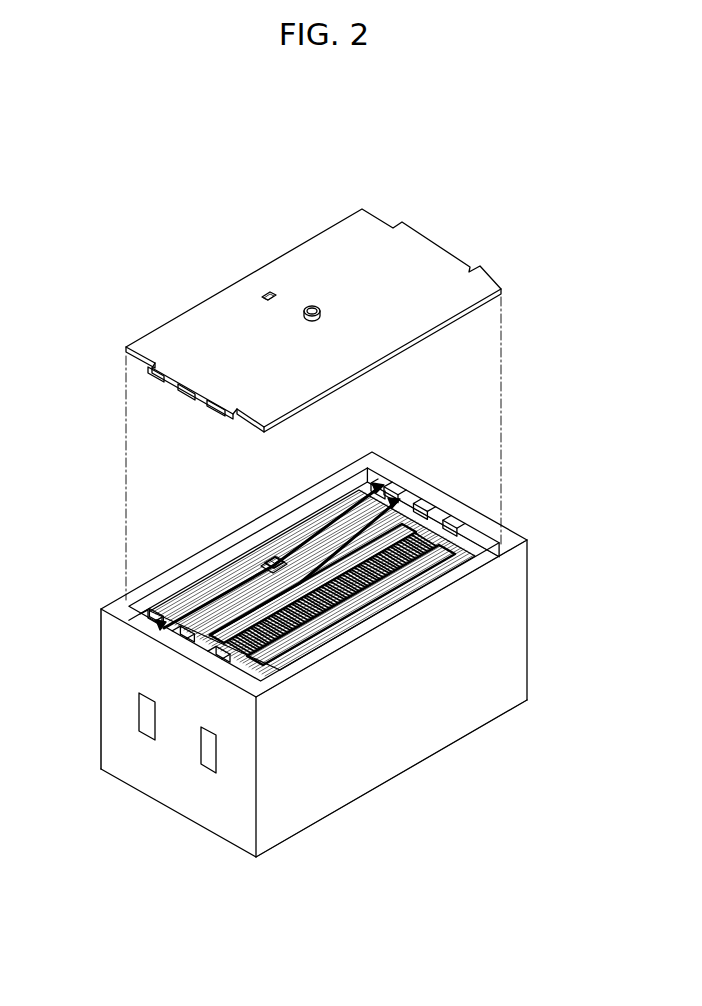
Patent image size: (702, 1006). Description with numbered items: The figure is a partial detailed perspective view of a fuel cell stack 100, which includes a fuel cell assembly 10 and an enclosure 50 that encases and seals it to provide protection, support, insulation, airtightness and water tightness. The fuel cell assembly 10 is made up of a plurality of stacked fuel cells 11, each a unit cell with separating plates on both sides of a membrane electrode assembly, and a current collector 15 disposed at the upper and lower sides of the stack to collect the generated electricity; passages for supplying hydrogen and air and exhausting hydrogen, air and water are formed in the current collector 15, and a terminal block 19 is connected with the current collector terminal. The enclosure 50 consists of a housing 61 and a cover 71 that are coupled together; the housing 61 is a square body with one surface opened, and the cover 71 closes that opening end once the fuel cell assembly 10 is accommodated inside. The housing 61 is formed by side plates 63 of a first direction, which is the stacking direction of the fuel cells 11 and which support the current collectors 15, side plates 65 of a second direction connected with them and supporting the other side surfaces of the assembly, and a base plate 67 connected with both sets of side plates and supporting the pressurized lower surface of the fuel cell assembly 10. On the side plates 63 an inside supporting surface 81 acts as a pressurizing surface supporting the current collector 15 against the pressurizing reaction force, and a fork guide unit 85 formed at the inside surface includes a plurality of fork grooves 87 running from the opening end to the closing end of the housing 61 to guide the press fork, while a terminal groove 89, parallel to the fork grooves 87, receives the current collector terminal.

The fuel cell stack 100 is at (170, 190).
The enclosure 50 is at (70, 385).
The cover 71 is at (160, 376).
The housing 61 is at (155, 560).
The side plates of a first direction 63 is at (393, 463).
The side plates of a second direction 65 is at (222, 538).
The base plate 67 is at (353, 806).
The current collector 15 is at (490, 552).
The fuel cell assembly 10 is at (302, 512).
The fuel cell 11 is at (205, 585).
The terminal block 19 is at (271, 558).
The fork guide unit 85 is at (345, 513).
The inside supporting surface 81 is at (372, 489).
The fork groove 87 is at (417, 487).
The terminal groove 89 is at (440, 504).